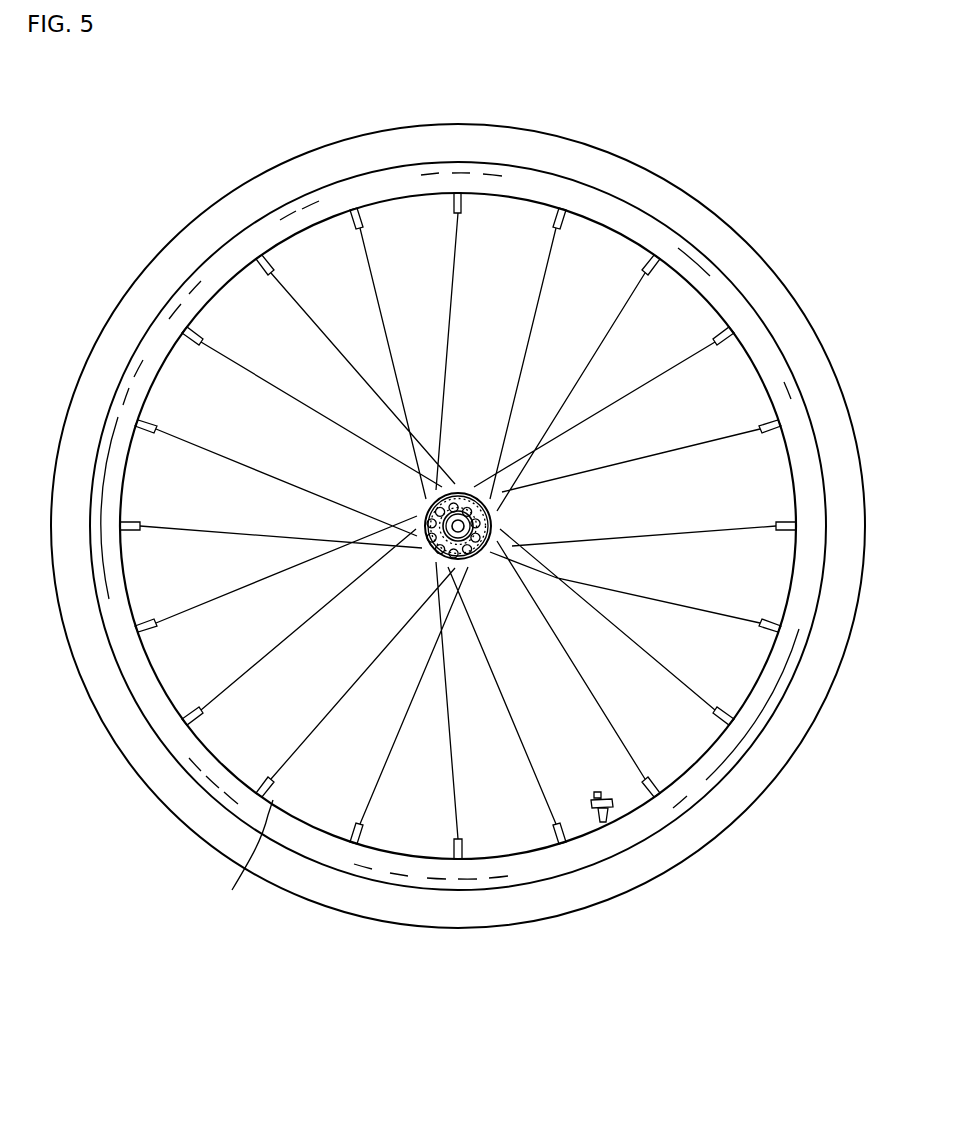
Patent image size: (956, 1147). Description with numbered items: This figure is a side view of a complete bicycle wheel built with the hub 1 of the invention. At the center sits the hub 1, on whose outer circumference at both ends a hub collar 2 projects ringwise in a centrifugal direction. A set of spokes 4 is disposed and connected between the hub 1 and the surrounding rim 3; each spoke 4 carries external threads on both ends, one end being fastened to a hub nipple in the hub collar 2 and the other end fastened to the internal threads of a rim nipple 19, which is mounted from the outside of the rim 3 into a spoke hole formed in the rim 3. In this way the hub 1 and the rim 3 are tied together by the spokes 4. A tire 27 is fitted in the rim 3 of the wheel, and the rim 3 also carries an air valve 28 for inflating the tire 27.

The hub 1 is at (466, 484).
The hub collar 2 is at (430, 506).
The rim 3 is at (178, 738).
The spoke 4 is at (690, 445).
The rim nipple 19 is at (239, 860).
The tire 27 is at (722, 243).
The air valve 28 is at (602, 822).